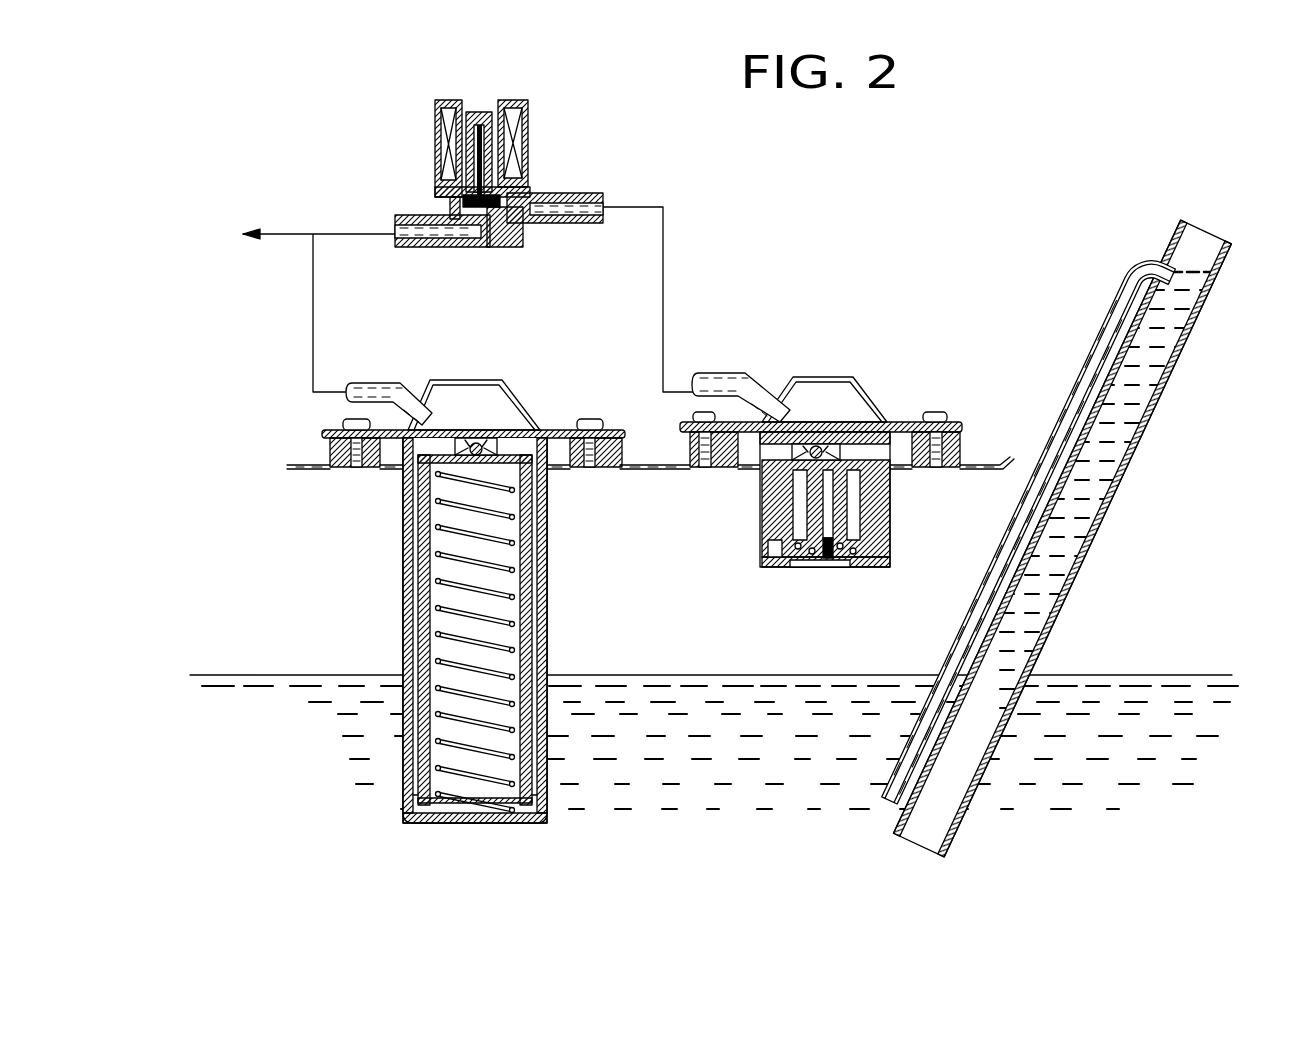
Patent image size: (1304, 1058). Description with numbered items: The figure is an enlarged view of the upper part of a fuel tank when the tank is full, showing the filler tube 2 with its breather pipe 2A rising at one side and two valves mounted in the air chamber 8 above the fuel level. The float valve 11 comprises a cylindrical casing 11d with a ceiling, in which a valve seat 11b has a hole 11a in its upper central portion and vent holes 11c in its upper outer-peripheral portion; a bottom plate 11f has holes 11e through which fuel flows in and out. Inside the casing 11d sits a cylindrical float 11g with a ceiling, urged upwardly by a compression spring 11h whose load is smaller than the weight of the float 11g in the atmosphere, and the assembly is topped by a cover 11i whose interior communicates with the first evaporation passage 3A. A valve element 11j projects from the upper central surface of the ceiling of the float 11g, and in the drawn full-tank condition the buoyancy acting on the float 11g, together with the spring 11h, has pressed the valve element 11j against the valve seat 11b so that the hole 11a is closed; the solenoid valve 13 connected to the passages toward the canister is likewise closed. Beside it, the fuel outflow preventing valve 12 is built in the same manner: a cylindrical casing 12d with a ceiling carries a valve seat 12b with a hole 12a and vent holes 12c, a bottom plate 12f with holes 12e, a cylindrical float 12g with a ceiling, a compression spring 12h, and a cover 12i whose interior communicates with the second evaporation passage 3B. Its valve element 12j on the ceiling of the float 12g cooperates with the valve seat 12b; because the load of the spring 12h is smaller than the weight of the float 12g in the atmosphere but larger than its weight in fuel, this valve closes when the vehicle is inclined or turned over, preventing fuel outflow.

The filler tube 2 is at (1122, 478).
The breather pipe 2A is at (1073, 389).
The first evaporation passage 3A is at (313, 305).
The second evaporation passage 3B is at (663, 312).
The air chamber 8 is at (272, 619).
The float valve 11 is at (403, 573).
The hole 11a is at (474, 442).
The valve seat 11b is at (488, 444).
The vent holes 11c is at (397, 458).
The cylindrical casing 11d is at (405, 633).
The holes 11e is at (428, 827).
The bottom plate 11f is at (487, 827).
The cylindrical float 11g is at (542, 573).
The compression spring 11h is at (545, 628).
The cover 11i is at (528, 407).
The valve element 11j is at (435, 396).
The fuel outflow preventing valve 12 is at (893, 533).
The hole 12a is at (815, 440).
The valve seat 12b is at (838, 440).
The vent holes 12c is at (757, 455).
The cylindrical casing 12d is at (770, 517).
The holes 12e is at (870, 560).
The bottom plate 12f is at (845, 560).
The cylindrical float 12g is at (770, 540).
The compression spring 12h is at (777, 560).
The cover 12i is at (866, 408).
The valve element 12j is at (788, 380).
The solenoid valve 13 is at (530, 142).